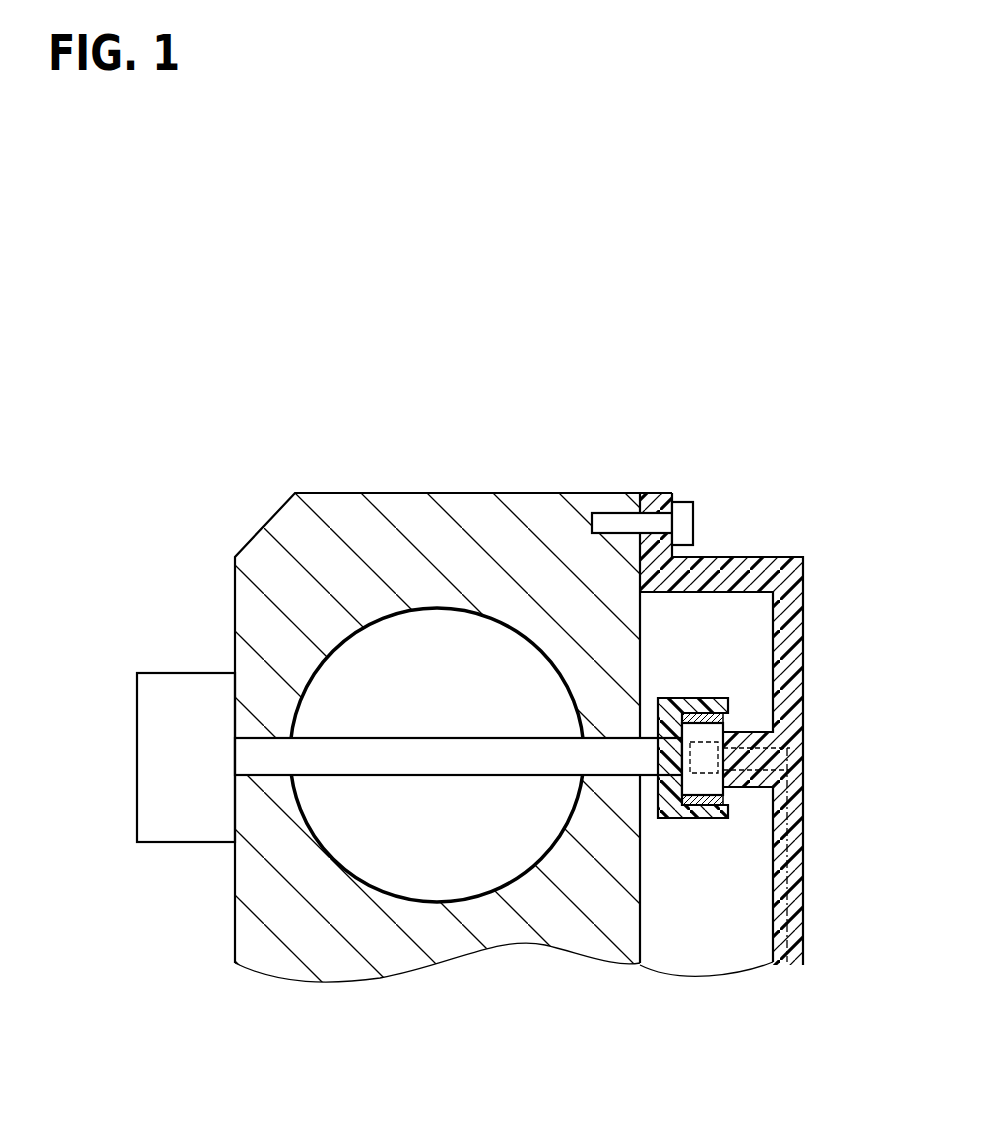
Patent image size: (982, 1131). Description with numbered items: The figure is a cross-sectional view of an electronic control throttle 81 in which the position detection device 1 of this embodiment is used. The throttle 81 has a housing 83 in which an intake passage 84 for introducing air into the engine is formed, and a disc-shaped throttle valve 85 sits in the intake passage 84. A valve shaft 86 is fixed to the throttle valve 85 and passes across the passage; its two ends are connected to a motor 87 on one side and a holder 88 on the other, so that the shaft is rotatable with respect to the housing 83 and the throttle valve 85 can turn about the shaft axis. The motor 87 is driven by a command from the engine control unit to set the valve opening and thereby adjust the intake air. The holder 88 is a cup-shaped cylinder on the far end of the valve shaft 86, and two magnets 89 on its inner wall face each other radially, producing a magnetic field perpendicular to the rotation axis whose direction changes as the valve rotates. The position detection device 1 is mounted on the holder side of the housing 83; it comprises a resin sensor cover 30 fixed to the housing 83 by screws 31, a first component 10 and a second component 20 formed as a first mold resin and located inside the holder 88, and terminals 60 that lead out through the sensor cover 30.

The position detection device 1 is at (805, 665).
The first component 10 is at (706, 740).
The second component 20 is at (712, 792).
The sensor cover 30 is at (792, 622).
The screw 31 is at (693, 516).
The terminal 60 is at (790, 868).
The electronic control throttle 81 is at (780, 395).
The housing 83 is at (327, 590).
The intake passage 84 is at (528, 868).
The throttle valve 85 is at (437, 680).
The valve shaft 86 is at (372, 752).
The motor 87 is at (182, 673).
The holder 88 is at (668, 812).
The magnet 89 is at (697, 714).